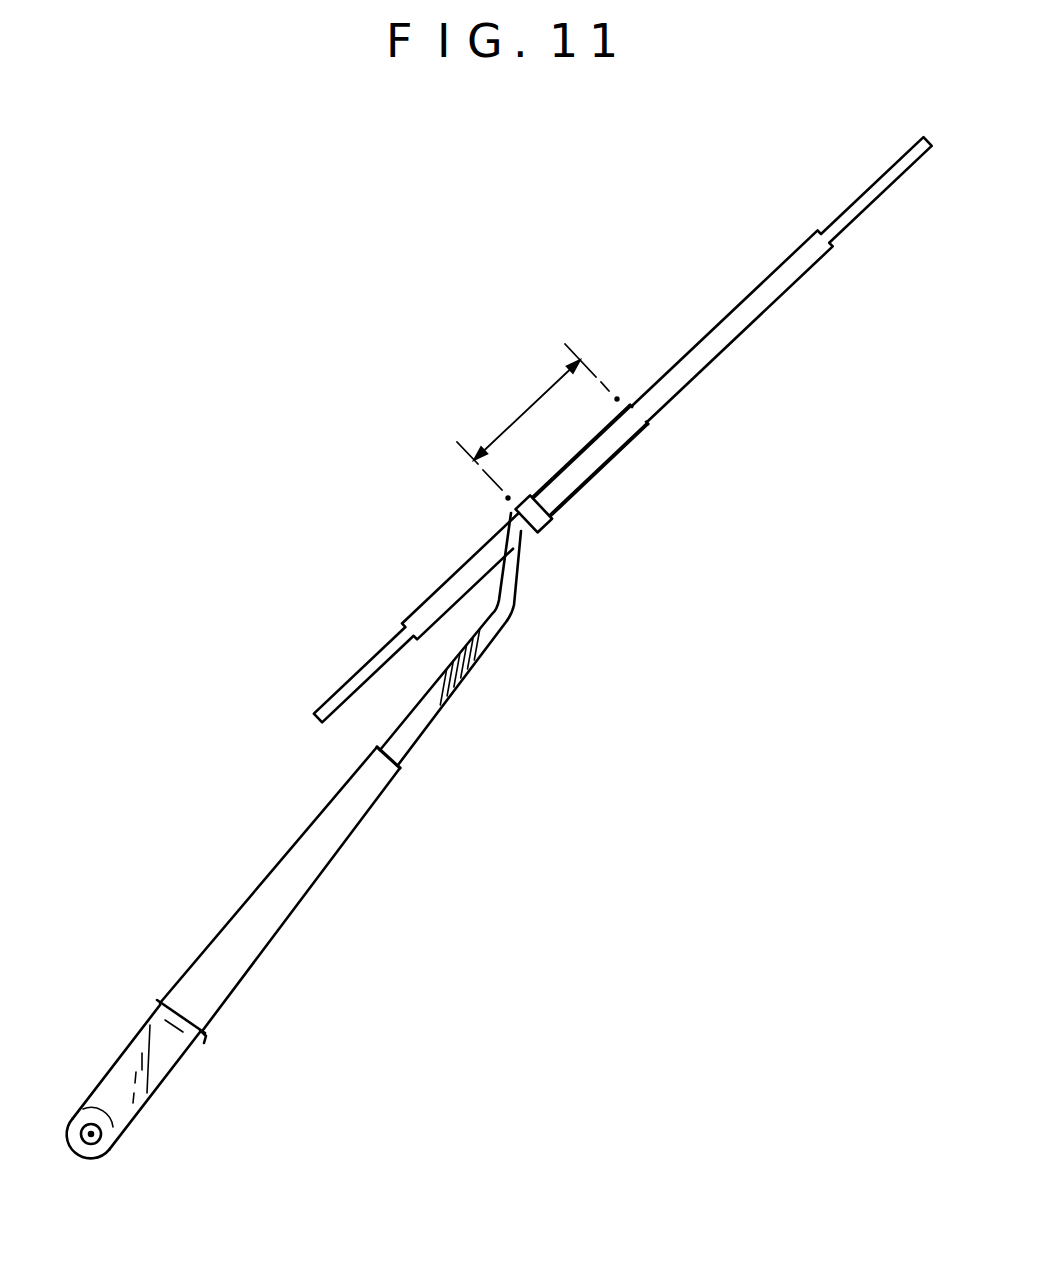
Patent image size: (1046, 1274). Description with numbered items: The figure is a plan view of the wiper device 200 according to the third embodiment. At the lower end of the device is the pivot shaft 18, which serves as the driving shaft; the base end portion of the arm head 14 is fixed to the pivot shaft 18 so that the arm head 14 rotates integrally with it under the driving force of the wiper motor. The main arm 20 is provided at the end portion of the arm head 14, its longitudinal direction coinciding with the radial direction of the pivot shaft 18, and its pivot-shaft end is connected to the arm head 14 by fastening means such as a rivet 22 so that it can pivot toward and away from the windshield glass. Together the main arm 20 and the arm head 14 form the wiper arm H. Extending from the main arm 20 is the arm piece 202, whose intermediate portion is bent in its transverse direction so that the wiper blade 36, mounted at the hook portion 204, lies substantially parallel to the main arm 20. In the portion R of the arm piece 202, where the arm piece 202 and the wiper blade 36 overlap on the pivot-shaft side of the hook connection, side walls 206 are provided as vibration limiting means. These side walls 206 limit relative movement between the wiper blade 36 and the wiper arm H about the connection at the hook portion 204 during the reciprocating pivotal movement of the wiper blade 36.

The wiper device 200 is at (542, 473).
The wiper blade 36 is at (757, 305).
The hook portion 204 is at (627, 430).
The side walls 206 is at (540, 528).
The arm piece 202 is at (493, 628).
The portion R is at (531, 412).
The wiper arm H is at (295, 978).
The main arm 20 is at (238, 945).
The rivet 22 is at (203, 1036).
The arm head 14 is at (158, 1064).
The pivot shaft 18 is at (93, 1134).